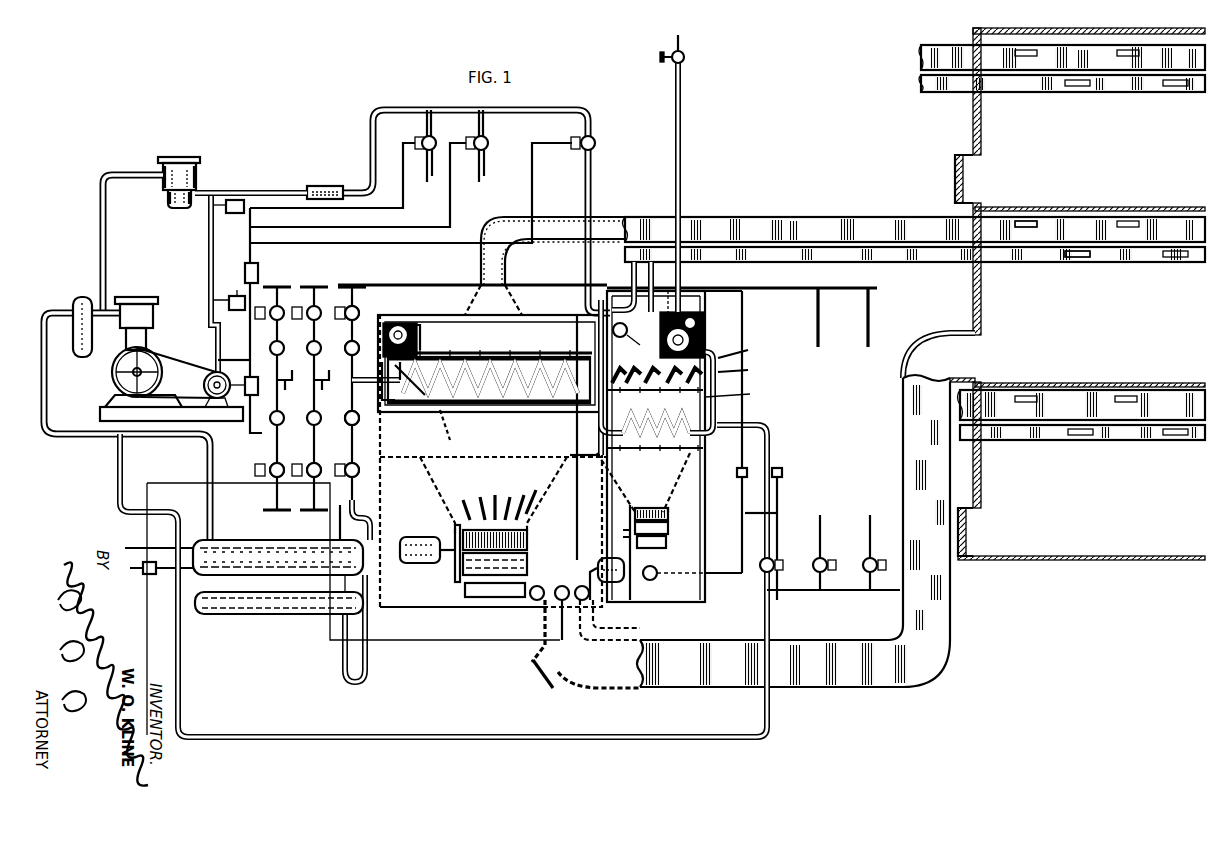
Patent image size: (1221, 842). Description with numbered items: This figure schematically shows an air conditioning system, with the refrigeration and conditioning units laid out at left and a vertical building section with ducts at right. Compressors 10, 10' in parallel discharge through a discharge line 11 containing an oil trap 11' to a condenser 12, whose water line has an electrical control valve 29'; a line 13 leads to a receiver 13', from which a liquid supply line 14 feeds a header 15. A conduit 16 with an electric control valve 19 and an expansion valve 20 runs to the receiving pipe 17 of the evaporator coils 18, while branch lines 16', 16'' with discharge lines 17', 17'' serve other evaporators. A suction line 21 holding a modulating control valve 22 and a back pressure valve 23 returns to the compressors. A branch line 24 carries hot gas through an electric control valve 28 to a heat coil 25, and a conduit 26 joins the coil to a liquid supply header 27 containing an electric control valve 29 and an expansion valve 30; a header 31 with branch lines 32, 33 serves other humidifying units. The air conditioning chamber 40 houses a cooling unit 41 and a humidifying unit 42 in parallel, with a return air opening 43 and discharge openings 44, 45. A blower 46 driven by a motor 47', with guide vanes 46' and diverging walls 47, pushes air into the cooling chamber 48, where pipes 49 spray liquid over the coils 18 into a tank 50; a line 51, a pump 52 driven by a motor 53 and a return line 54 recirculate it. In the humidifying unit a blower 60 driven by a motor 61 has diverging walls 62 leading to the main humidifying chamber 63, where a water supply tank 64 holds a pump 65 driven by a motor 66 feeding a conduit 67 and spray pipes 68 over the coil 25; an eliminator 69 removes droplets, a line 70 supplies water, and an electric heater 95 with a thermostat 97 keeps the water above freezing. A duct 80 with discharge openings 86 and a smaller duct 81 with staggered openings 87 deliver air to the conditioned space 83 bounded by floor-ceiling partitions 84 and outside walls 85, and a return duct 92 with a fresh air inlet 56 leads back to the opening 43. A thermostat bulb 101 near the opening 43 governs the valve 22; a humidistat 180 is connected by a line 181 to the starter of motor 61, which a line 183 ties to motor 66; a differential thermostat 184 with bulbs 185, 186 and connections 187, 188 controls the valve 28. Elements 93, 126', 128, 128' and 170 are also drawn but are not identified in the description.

The compressor 10 is at (171, 346).
The compressor 10' is at (193, 169).
The discharge line 11 is at (175, 343).
The oil trap 11' is at (81, 314).
The condenser 12 is at (237, 575).
The line 13 is at (159, 572).
The receiver 13' is at (279, 610).
The liquid supply line 14 is at (368, 683).
The header 15 is at (350, 520).
The conduit 16 is at (342, 432).
The branch line 16' is at (302, 456).
The branch line 16'' is at (264, 456).
The receiving pipe 17 is at (348, 396).
The discharge line 17' is at (310, 398).
The discharge line 17'' is at (272, 398).
The evaporator coils 18 is at (418, 408).
The electric control valve 19 is at (372, 478).
The expansion valve 20 is at (366, 419).
The suction line 21 is at (594, 186).
The motor actuated modulating control valve 22 is at (596, 142).
The spring loaded back pressure valve 23 is at (327, 182).
The branch line 24 is at (118, 504).
The heat coil 25 is at (596, 377).
The conduit 26 is at (582, 284).
The liquid supply header 27 is at (413, 280).
The electric control valve 28 is at (762, 576).
The electric control valve 29 is at (366, 305).
The electrical control valve 29' is at (134, 579).
The expansion valve 30 is at (352, 346).
The header 31 is at (802, 591).
The branch line 32 is at (820, 530).
The branch line 33 is at (870, 530).
The air conditioning chamber 40 is at (444, 611).
The cooling unit 41 is at (563, 507).
The humidifying unit 42 is at (620, 476).
The return air opening 43 is at (546, 631).
The discharge opening 44 is at (519, 315).
The discharge opening 45 is at (634, 294).
The main fan or blower 46 is at (491, 579).
The guide vanes 46' is at (469, 493).
The diverging walls 47 is at (525, 495).
The motor 47' is at (424, 538).
The cooling chamber 48 is at (496, 473).
The spray pipes 49 is at (576, 346).
The tank 50 is at (508, 410).
The line 51 is at (455, 429).
The pump 52 is at (395, 379).
The motor 53 is at (397, 315).
The return line 54 is at (376, 366).
The fresh air inlet 56 is at (550, 676).
The fan or blower 60 is at (670, 523).
The motor 61 is at (616, 556).
The diverging discharge directing walls 62 is at (678, 494).
The main humidifying chamber 63 is at (658, 358).
The water supply tank 64 is at (696, 330).
The pump 65 is at (743, 348).
The motor 66 is at (695, 287).
The conduit 67 is at (738, 393).
The pipes 68 is at (705, 412).
The eliminator or baffle 69 is at (743, 370).
The line 70 is at (680, 273).
The duct 80 is at (618, 217).
The duct 81 is at (780, 262).
The conditioned space 83 is at (1085, 338).
The floor-ceiling partitions 84 is at (1133, 384).
The outside walls 85 is at (974, 300).
The discharge openings 86 is at (1028, 228).
The openings 87 is at (1080, 257).
The return duct 92 is at (901, 411).
The bend 93 is at (980, 334).
The resistance type electric heater 95 is at (666, 328).
The thermostat 97 is at (700, 312).
The thermostat bulb 101 is at (540, 590).
The control 126' is at (208, 258).
The line 128 is at (216, 295).
The line 128' is at (393, 271).
The humidistat line 170 is at (578, 620).
The humidistat 180 is at (592, 610).
The line 181 is at (589, 574).
The line 183 is at (696, 596).
The differential type thermostat 184 is at (749, 468).
The bulb 185 is at (656, 573).
The bulb 186 is at (622, 343).
The connection 187 is at (778, 510).
The connection 188 is at (742, 307).